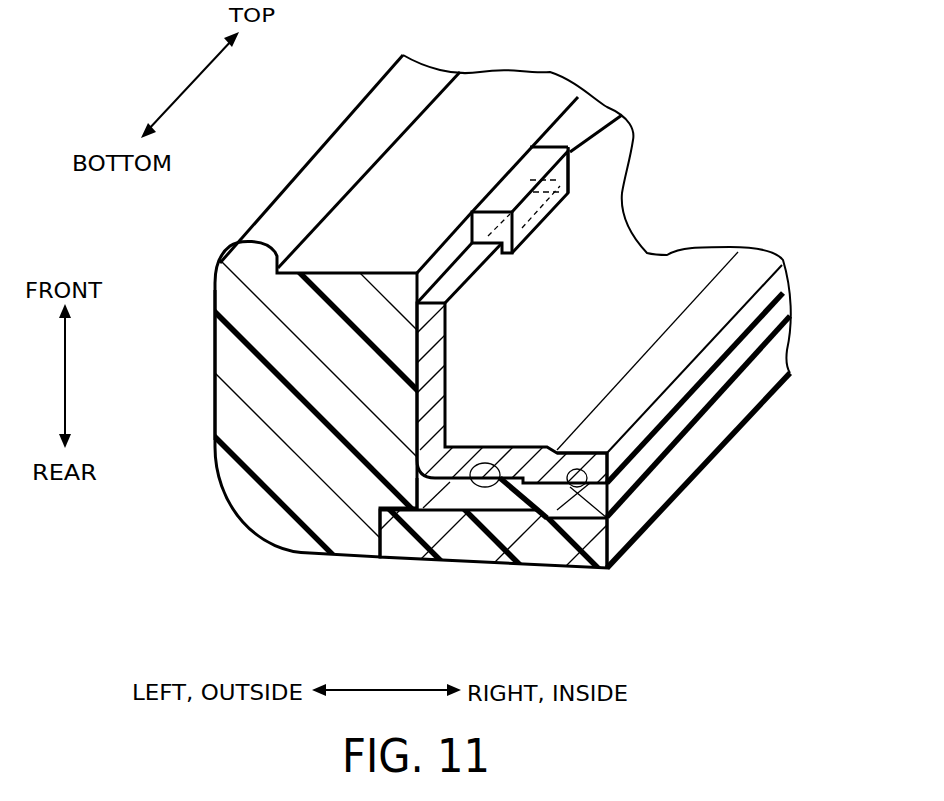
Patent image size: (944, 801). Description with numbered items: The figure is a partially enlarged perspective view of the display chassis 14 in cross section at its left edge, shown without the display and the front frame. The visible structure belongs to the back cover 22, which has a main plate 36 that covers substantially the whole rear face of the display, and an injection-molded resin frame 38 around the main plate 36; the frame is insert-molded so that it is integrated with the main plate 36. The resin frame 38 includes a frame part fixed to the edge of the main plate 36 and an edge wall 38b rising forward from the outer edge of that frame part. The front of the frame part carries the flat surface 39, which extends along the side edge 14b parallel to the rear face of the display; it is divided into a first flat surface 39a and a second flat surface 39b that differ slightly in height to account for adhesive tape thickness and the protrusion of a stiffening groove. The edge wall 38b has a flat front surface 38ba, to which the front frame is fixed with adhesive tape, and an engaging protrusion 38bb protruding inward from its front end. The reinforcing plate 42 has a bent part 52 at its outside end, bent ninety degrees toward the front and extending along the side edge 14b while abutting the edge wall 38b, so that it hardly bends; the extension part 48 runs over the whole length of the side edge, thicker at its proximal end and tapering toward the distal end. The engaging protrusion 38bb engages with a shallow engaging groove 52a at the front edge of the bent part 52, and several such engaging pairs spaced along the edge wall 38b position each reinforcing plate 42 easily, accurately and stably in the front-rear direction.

The display chassis 14 is at (641, 48).
The side edge 14b is at (215, 300).
The back cover 22 is at (198, 428).
The main plate 36 is at (421, 547).
The injection-molded resin frame 38 is at (303, 414).
The edge wall 38b is at (242, 362).
The front surface 38ba is at (510, 100).
The engaging protrusion 38bb is at (512, 200).
The flat surface 39 is at (545, 444).
The second flat surface 39b is at (471, 487).
The first flat surface 39a is at (570, 487).
The reinforcing plate 42 is at (673, 375).
The extension part 48 is at (667, 253).
The bent part 52 is at (595, 190).
The engaging groove 52a is at (525, 185).